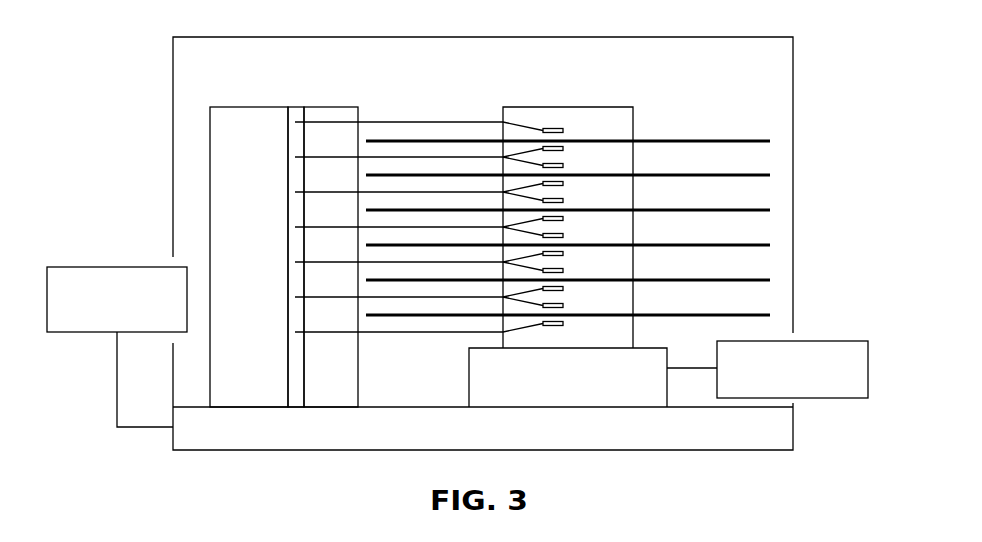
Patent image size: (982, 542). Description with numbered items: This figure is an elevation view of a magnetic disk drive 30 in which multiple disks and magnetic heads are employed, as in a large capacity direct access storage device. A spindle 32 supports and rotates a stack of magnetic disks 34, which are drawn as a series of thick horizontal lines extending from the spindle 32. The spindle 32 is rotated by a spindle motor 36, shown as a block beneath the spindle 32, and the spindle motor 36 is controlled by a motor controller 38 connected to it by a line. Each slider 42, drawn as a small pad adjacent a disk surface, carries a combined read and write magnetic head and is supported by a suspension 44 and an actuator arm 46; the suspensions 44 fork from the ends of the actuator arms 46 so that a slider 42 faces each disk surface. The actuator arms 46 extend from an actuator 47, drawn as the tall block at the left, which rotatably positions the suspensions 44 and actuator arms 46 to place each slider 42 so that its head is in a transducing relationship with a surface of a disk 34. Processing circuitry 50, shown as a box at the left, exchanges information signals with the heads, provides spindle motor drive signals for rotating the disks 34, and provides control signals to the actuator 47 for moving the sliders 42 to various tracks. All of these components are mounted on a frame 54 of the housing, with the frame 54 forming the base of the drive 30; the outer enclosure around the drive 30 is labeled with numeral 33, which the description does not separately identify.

The disk drive 30 is at (457, 256).
The actuator block 32 is at (623, 107).
The housing 33 is at (482, 37).
The disks 34 is at (770, 143).
The spindle motor 36 is at (556, 391).
The motor controller 38 is at (828, 398).
The read/write heads 42 is at (563, 150).
The suspensions 44 is at (535, 157).
The actuator arms 46 is at (472, 157).
The actuator motor 47 is at (240, 107).
The processing circuitry 50 is at (88, 267).
The base plate 54 is at (225, 445).